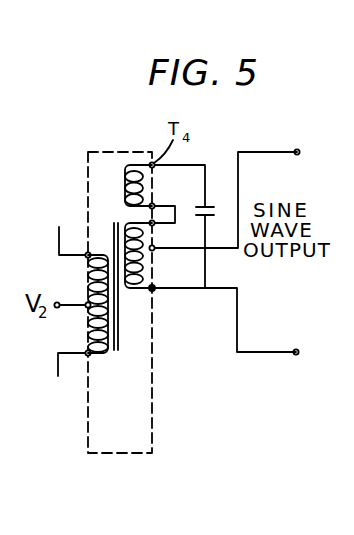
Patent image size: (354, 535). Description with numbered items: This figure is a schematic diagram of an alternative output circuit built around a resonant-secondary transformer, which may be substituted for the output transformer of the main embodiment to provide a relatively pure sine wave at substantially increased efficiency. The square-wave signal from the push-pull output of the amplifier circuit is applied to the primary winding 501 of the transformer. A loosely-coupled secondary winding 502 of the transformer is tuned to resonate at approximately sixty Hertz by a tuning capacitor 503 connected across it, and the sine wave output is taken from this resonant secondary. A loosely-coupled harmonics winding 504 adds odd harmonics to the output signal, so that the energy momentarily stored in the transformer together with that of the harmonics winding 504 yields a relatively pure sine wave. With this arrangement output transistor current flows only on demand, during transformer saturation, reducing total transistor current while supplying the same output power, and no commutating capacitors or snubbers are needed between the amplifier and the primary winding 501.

The primary winding 501 is at (112, 334).
The secondary winding 502 is at (125, 291).
The tuning capacitor 503 is at (208, 205).
The harmonics winding 504 is at (124, 178).